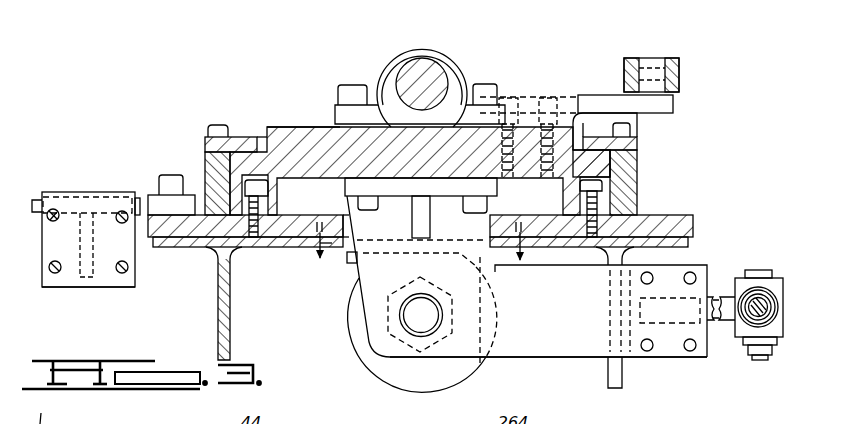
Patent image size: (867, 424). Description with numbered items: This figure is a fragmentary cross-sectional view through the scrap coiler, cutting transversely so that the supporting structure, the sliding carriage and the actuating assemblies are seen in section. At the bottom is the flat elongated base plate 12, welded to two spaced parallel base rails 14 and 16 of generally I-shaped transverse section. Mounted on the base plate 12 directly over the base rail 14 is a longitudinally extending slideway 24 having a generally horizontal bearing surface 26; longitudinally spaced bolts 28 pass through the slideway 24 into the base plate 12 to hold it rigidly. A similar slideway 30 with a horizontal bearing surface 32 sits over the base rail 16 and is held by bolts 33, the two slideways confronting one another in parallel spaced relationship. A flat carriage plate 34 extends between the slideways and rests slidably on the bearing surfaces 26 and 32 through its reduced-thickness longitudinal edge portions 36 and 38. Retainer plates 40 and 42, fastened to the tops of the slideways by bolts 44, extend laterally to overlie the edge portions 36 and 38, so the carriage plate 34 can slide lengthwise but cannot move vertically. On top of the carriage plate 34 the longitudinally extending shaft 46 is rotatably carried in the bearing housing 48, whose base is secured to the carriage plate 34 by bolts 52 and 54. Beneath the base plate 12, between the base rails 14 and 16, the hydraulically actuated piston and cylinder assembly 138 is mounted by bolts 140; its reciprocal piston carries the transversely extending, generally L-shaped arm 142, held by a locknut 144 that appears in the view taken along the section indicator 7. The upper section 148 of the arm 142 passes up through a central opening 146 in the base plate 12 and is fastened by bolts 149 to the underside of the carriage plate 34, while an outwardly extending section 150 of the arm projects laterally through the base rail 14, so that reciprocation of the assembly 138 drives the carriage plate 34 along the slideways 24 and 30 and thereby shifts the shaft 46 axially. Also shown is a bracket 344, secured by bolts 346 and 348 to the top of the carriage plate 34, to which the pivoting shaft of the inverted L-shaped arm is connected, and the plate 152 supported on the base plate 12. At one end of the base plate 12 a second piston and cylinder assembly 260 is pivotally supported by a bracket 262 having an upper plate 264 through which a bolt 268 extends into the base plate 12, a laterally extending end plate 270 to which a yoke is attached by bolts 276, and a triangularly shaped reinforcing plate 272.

The base plate 12 is at (697, 226).
The base rail 14 is at (623, 387).
The base rail 16 is at (216, 287).
The slideway 24 is at (645, 184).
The bearing surface 26 is at (578, 182).
The bolts 28 is at (608, 206).
The slideway 30 is at (204, 168).
The bearing surface 32 is at (268, 172).
The bolts 33 is at (270, 198).
The carriage plate 34 is at (297, 125).
The longitudinal edge portion 36 is at (611, 160).
The longitudinal edge portion 38 is at (204, 160).
The retainer plate 40 is at (640, 130).
The retainer plate 42 is at (205, 137).
The bolts 44 is at (226, 126).
The shaft 46 is at (397, 71).
The bearing housing 48 is at (469, 75).
The bolt 52 is at (490, 86).
The bolt 54 is at (336, 95).
The section line 7 is at (412, 252).
The piston and cylinder assembly 138 is at (464, 385).
The bolts 140 is at (351, 265).
The arm 142 is at (561, 359).
The locknut 144 is at (404, 343).
The central opening 146 is at (340, 240).
The upper section 148 is at (408, 177).
The bolts 149 is at (460, 210).
The outwardly extending section 150 is at (674, 347).
The plate 152 is at (759, 315).
The piston and cylinder assembly 260 is at (137, 402).
The bracket 262 is at (62, 190).
The upper plate 264 is at (36, 198).
The bolt 268 is at (157, 178).
The end plate 270 is at (59, 273).
The reinforcing plate 272 is at (97, 272).
The bolts 276 is at (60, 224).
The bracket 344 is at (677, 103).
The bolt 346 is at (512, 96).
The bolt 348 is at (563, 89).